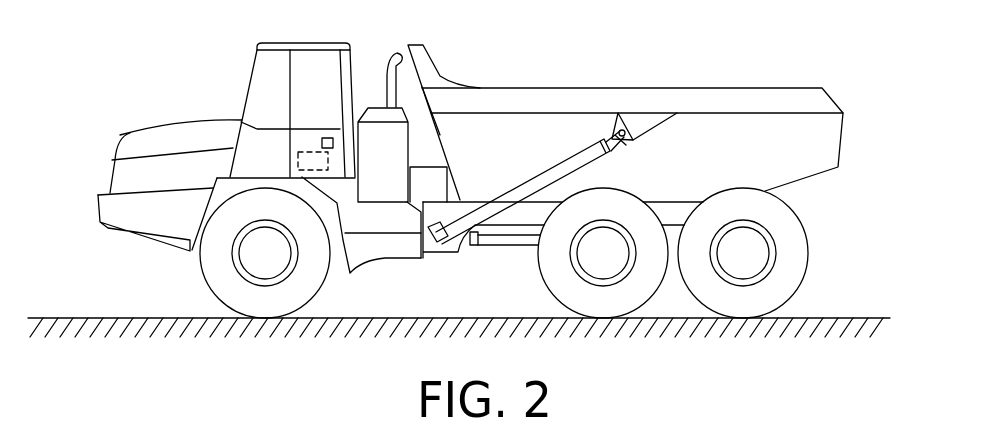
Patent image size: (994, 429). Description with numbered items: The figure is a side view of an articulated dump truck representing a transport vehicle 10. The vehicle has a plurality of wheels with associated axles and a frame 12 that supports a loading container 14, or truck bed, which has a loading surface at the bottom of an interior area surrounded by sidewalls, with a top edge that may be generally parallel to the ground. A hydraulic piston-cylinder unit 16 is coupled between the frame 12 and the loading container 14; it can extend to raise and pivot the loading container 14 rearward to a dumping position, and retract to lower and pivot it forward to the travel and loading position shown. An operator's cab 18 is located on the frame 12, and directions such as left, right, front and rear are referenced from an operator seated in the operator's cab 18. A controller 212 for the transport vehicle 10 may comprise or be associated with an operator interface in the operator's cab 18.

The transport vehicle 10 is at (438, 161).
The frame 12 is at (140, 203).
The loading container 14 is at (772, 88).
The hydraulic piston-cylinder unit 16 is at (503, 200).
The operator's cab 18 is at (267, 107).
The controller 212 is at (328, 162).